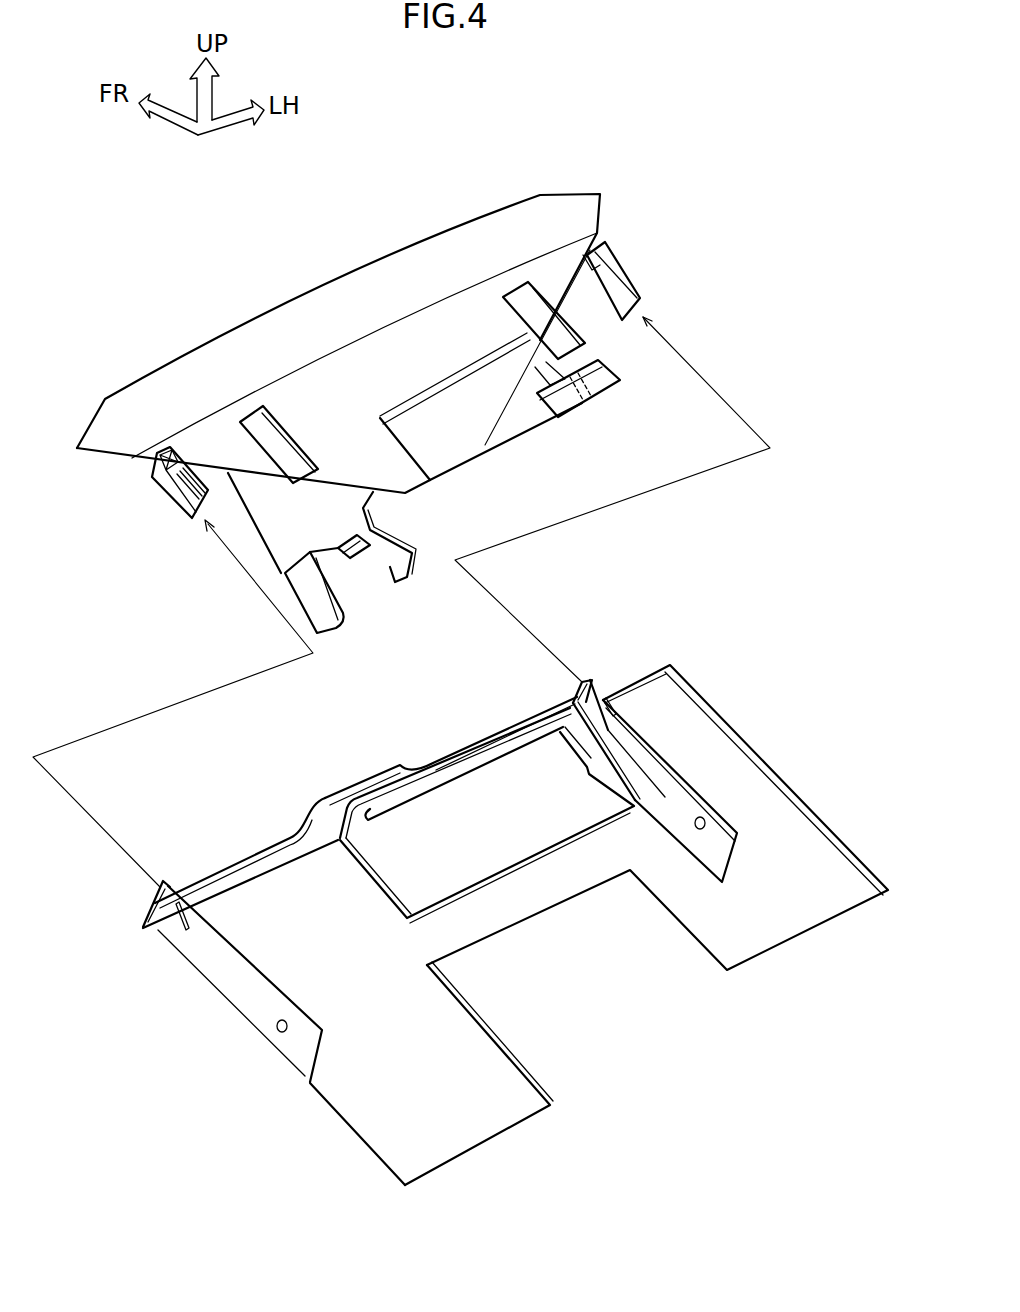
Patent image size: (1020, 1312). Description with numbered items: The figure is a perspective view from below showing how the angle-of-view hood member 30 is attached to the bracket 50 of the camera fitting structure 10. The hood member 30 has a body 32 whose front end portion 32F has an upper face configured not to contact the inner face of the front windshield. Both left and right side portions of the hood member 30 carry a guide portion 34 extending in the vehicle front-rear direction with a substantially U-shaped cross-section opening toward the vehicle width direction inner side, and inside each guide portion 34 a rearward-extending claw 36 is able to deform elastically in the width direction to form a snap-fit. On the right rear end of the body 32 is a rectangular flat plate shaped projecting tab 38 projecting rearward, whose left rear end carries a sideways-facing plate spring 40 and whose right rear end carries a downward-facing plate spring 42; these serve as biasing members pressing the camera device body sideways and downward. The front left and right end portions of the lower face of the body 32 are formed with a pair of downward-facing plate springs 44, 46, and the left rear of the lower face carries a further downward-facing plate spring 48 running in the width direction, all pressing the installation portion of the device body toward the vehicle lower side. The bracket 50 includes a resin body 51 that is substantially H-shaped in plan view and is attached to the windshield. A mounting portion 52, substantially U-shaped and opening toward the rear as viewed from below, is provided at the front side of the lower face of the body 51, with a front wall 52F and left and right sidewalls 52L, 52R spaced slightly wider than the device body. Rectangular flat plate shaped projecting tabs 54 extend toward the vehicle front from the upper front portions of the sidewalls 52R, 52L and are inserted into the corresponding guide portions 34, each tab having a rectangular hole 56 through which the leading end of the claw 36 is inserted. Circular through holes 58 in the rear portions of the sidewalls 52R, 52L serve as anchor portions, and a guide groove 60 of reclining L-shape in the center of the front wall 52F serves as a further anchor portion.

The camera fitting structure 10 is at (757, 418).
The angle-of-view hood member 30 is at (567, 188).
The body 32 is at (413, 470).
The front end portion 32F is at (290, 325).
The guide portion 34 is at (630, 298).
The claw 36 is at (210, 498).
The projecting tab 38 is at (305, 528).
The sideways-facing plate spring 40 is at (415, 576).
The downward-facing plate spring 42 is at (330, 632).
The downward-facing plate spring 44 is at (520, 325).
The downward-facing plate spring 46 is at (300, 445).
The downward-facing plate spring 48 is at (595, 380).
The bracket 50 is at (738, 727).
The body 51 is at (372, 1115).
The mounting portion 52 is at (436, 773).
The front wall 52F is at (268, 852).
The left sidewall 52L is at (675, 797).
The right sidewall 52R is at (250, 1013).
The projecting tab 54 is at (165, 895).
The rectangular hole 56 is at (183, 910).
The circular through hole 58 is at (290, 1027).
The guide groove 60 is at (350, 824).